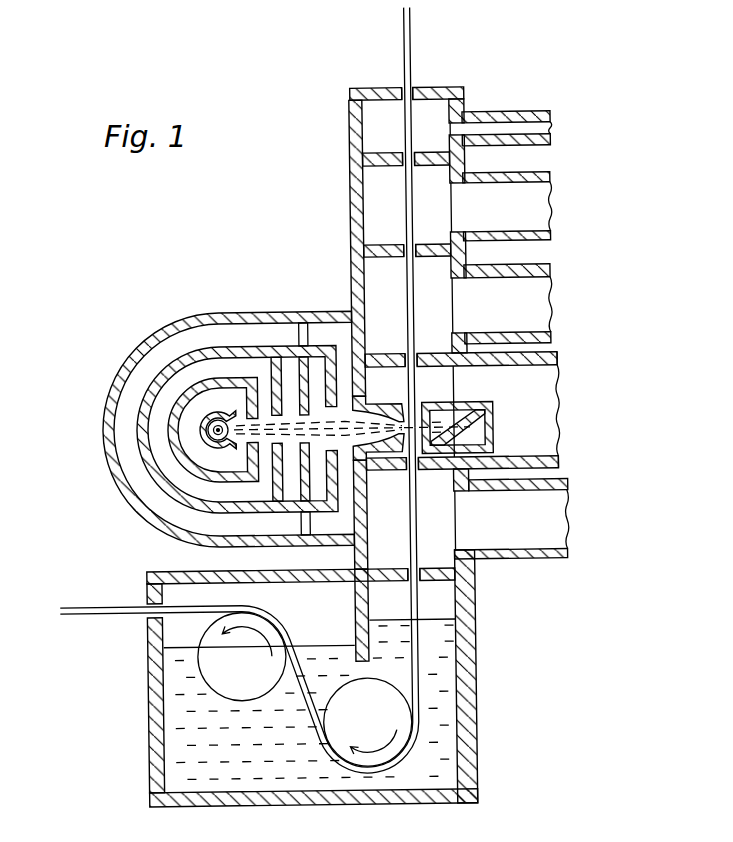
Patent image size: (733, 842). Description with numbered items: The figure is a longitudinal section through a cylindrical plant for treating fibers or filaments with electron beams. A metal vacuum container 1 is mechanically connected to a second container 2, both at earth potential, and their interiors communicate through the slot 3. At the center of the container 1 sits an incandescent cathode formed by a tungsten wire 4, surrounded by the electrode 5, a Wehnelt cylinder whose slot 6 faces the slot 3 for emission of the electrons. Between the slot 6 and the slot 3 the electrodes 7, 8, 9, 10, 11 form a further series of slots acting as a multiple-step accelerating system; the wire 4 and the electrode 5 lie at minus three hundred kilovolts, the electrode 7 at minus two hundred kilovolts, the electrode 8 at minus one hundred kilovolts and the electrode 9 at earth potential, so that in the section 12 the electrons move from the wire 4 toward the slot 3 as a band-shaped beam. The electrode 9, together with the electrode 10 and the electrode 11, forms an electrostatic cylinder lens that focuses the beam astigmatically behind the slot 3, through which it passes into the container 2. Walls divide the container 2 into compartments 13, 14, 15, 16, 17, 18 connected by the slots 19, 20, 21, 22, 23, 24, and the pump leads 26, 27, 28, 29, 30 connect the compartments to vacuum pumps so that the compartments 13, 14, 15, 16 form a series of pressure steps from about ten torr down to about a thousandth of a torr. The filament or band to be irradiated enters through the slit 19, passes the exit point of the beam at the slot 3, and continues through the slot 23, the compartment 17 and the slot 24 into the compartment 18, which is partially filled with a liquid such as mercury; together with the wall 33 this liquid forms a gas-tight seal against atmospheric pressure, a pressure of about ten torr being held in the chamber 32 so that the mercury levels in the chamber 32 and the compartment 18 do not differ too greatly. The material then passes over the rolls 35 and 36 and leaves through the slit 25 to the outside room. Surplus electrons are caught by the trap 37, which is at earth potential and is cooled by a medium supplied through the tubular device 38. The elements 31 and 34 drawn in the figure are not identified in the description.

The metal vacuum container 1 is at (175, 313).
The second container 2 is at (354, 229).
The slot 3 is at (359, 435).
The tungsten wire 4 is at (219, 419).
The electrode 5 is at (211, 444).
The slot 6 is at (237, 448).
The electrode 7 is at (240, 486).
The electrode 8 is at (272, 470).
The electrode 9 is at (301, 459).
The electrode 10 is at (332, 459).
The electrode 11 is at (358, 457).
The section 12 is at (289, 421).
The compartment 13 is at (372, 130).
The compartment 14 is at (374, 190).
The compartment 15 is at (374, 275).
The compartment 16 is at (389, 370).
The compartment 17 is at (410, 528).
The compartment 18 is at (443, 607).
The slit 19 is at (416, 96).
The slot 20 is at (418, 164).
The slot 21 is at (417, 248).
The slot 22 is at (416, 356).
The slot 23 is at (420, 473).
The slot 24 is at (419, 571).
The slit 25 is at (142, 613).
The pump lead 26 is at (544, 132).
The pump lead 27 is at (545, 217).
The pump lead 28 is at (548, 307).
The pump lead 29 is at (563, 410).
The pump lead 30 is at (562, 529).
The wire 31 is at (417, 51).
The compartment 32 is at (175, 591).
The wall 33 is at (355, 602).
The roller 34 is at (445, 694).
The roll 35 is at (398, 748).
The roll 36 is at (202, 667).
The trap 37 is at (470, 408).
The tubular device 38 is at (480, 437).